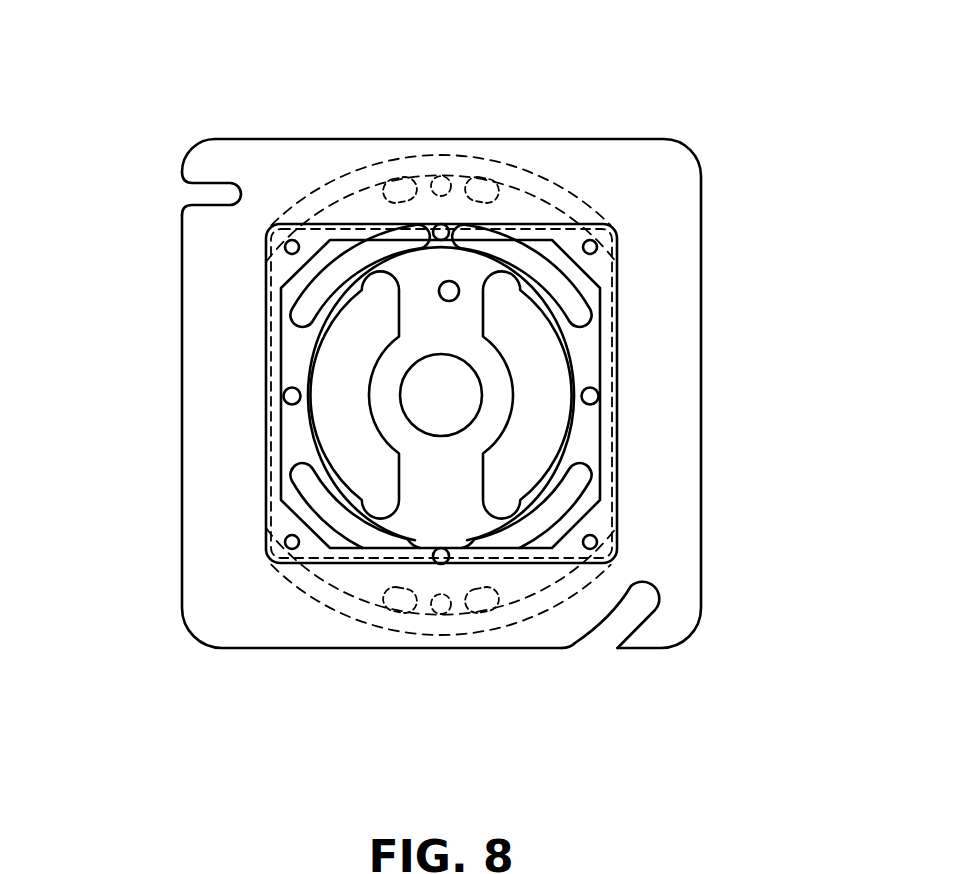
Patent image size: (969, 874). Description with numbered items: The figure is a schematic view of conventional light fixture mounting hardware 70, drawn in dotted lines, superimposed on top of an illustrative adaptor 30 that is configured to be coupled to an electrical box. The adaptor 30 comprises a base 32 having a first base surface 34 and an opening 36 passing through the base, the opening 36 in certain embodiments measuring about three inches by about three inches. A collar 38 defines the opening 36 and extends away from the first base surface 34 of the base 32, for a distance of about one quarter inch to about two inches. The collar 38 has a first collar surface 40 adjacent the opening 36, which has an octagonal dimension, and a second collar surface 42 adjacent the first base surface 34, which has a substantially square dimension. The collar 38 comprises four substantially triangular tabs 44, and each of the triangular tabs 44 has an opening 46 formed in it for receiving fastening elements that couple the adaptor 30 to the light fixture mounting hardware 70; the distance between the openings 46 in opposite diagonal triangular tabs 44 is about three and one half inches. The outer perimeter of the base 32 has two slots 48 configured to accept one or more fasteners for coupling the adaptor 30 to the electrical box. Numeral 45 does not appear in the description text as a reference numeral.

The adaptor 30 is at (730, 259).
The base 32 is at (715, 334).
The first base surface 34 is at (665, 420).
The opening 36 is at (540, 384).
The collar 38 is at (265, 368).
The first collar surface 40 is at (284, 310).
The second collar surface 42 is at (262, 441).
The substantially triangular tabs 44 is at (313, 240).
The keyed hole 45 is at (585, 248).
The opening 46 is at (298, 242).
The slots 48 is at (185, 192).
The light fixture mounting hardware 70 is at (452, 143).